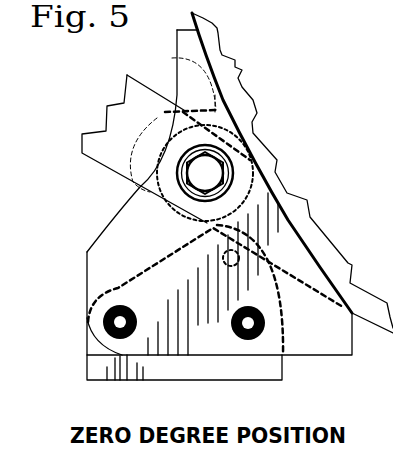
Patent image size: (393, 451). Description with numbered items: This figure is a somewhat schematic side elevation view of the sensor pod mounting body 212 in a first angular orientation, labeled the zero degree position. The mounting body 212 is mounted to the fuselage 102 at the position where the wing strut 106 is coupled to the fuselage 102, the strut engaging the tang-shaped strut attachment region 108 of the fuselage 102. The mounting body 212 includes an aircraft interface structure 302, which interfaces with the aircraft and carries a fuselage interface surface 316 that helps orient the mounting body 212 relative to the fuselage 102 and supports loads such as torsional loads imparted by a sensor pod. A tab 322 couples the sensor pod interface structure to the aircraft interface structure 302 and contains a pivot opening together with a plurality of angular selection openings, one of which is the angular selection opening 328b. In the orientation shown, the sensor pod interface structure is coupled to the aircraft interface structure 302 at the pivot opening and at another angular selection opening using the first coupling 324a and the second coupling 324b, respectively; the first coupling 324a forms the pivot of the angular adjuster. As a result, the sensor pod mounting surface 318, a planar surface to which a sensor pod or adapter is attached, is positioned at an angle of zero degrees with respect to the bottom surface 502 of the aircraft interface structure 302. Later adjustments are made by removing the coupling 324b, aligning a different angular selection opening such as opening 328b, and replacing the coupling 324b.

The sensor pod mounting body 212 is at (62, 83).
The tang-shaped strut attachment region 108 is at (172, 58).
The fuselage 102 is at (228, 75).
The wing strut 106 is at (131, 158).
The fuselage interface surface 316 is at (285, 206).
The aircraft interface structure 302 is at (120, 233).
The angular selection opening 328b is at (207, 228).
The first coupling 324a is at (88, 322).
The tab 322 is at (280, 297).
The second coupling 324b is at (247, 343).
The sensor pod mounting surface 318 is at (103, 387).
The bottom surface 502 is at (323, 356).